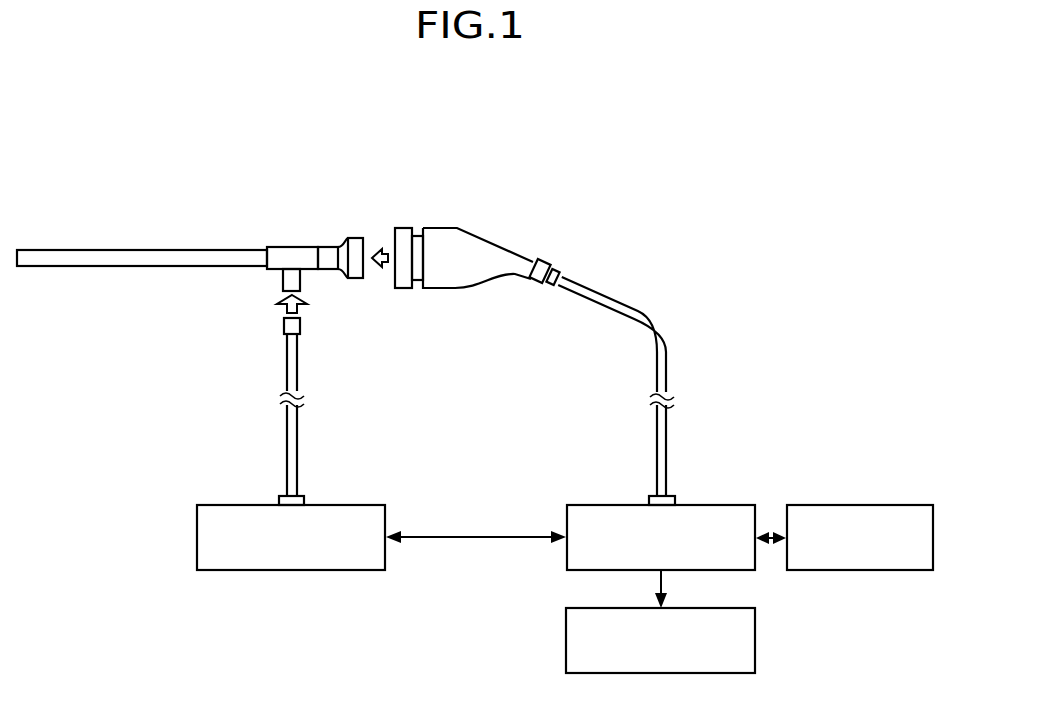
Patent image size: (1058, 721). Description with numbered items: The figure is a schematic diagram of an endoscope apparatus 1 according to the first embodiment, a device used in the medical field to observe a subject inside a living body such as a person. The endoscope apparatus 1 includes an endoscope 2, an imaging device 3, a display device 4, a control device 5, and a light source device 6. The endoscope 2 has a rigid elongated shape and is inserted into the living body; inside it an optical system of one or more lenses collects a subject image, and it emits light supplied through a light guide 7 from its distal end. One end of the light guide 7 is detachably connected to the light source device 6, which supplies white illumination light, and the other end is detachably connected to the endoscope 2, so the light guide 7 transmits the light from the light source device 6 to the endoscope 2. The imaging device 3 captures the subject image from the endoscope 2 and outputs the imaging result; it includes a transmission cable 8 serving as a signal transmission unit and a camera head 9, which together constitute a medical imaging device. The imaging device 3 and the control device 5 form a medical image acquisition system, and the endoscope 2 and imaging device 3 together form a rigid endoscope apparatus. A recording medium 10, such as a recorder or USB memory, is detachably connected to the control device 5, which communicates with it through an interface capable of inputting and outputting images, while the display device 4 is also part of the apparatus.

The endoscope apparatus 1 is at (626, 172).
The endoscope 2 is at (237, 250).
The imaging device 3 is at (400, 158).
The display device 4 is at (707, 608).
The control device 5 is at (707, 505).
The light source device 6 is at (347, 505).
The light guide 7 is at (287, 456).
The transmission cable 8 is at (591, 288).
The camera head 9 is at (452, 228).
The recording medium 10 is at (870, 505).